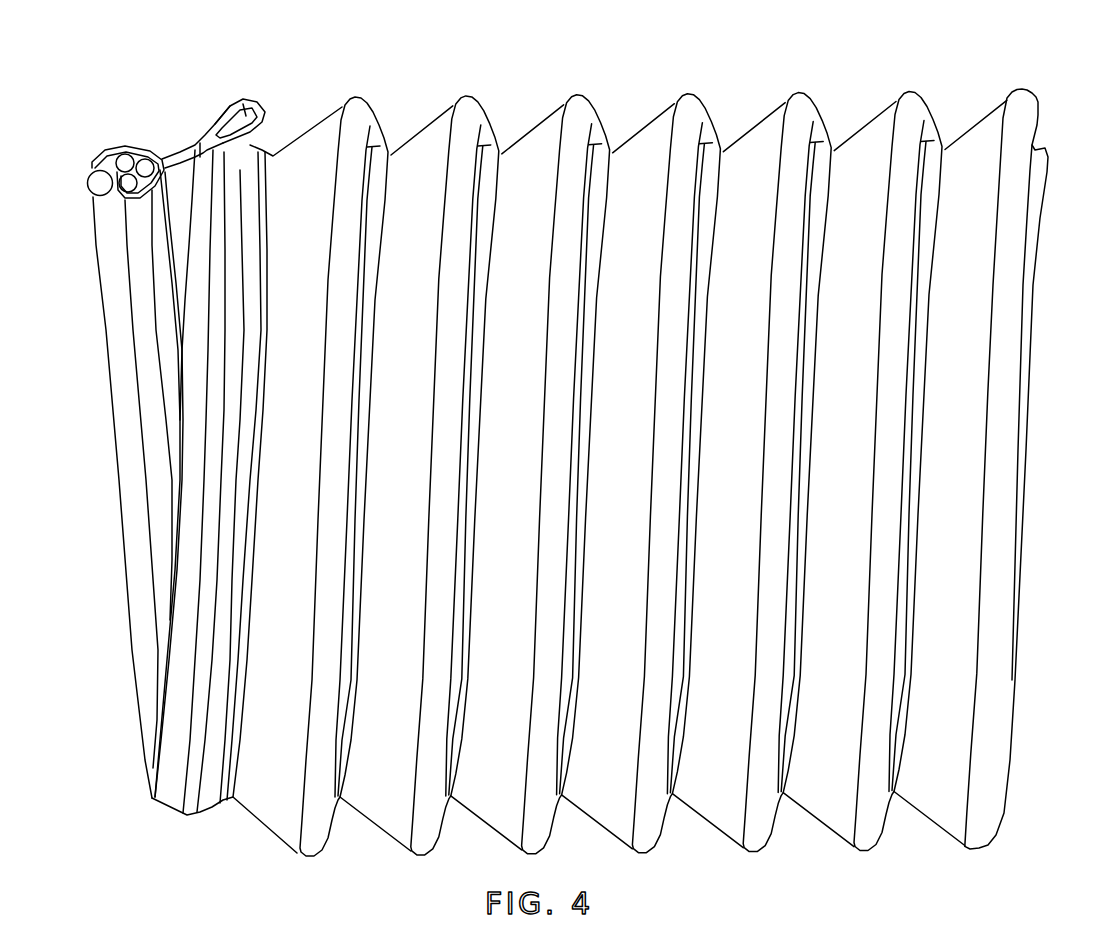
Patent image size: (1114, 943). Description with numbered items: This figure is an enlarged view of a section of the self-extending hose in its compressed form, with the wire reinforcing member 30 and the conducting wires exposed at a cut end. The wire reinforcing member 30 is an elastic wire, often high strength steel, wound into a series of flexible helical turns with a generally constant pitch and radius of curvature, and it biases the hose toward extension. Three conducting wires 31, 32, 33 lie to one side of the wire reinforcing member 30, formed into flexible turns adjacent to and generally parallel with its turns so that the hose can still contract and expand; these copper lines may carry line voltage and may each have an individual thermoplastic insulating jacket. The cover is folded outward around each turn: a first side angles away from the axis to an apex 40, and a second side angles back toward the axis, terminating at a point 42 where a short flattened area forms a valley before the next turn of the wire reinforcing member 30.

The wire reinforcing member 30 is at (98, 184).
The conducting wire 31 is at (121, 158).
The conducting wire 32 is at (126, 186).
The conducting wire 33 is at (145, 163).
The apex 40 is at (258, 104).
The point 42 is at (202, 147).